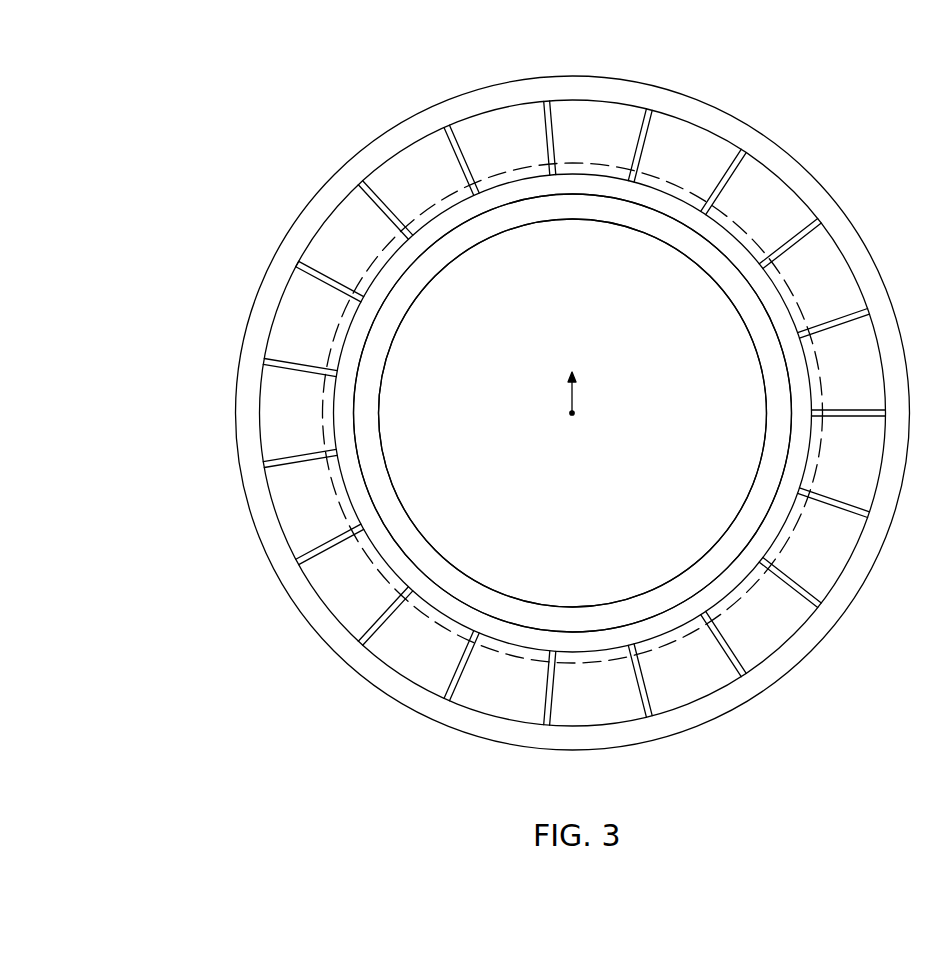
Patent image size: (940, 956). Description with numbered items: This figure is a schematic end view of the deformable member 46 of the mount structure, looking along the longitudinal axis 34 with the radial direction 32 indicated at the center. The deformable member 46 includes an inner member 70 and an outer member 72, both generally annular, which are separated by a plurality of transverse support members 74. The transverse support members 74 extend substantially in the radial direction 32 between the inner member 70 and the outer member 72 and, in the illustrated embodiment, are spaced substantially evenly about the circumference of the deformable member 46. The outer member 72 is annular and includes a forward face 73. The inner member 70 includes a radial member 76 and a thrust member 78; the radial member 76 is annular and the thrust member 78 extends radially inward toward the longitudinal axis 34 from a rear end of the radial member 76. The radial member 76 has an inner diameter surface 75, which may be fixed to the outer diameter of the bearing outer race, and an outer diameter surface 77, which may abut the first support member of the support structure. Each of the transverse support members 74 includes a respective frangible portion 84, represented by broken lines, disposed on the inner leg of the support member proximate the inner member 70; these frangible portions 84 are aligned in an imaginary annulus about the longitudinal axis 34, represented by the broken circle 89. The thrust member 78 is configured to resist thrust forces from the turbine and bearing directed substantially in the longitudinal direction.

The deformable member 46 is at (206, 90).
The outer member 72 is at (552, 92).
The forward face 73 is at (456, 112).
The transverse support members 74 is at (557, 133).
The frangible portion 84 is at (634, 166).
The broken circle 89 is at (740, 216).
The outer diameter surface 77 is at (366, 266).
The inner member 70 is at (543, 201).
The radial member 76 is at (592, 188).
The thrust member 78 is at (650, 223).
The inner diameter surface 75 is at (373, 326).
The radial direction 32 is at (578, 385).
The longitudinal axis 34 is at (574, 414).